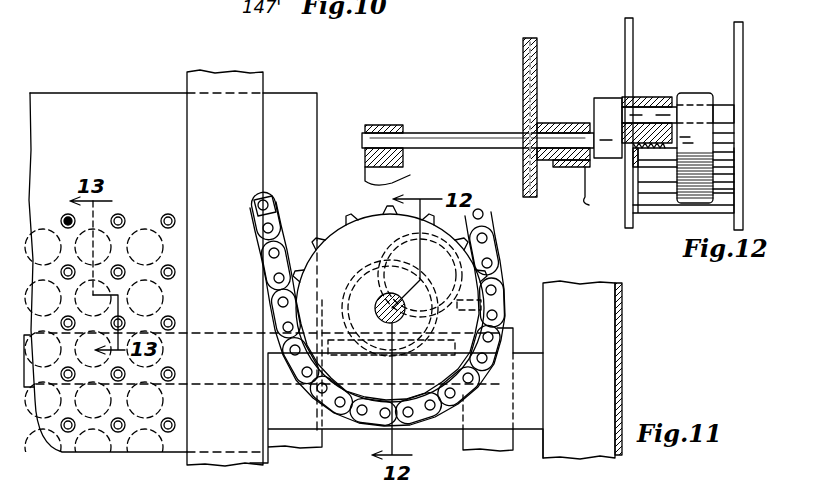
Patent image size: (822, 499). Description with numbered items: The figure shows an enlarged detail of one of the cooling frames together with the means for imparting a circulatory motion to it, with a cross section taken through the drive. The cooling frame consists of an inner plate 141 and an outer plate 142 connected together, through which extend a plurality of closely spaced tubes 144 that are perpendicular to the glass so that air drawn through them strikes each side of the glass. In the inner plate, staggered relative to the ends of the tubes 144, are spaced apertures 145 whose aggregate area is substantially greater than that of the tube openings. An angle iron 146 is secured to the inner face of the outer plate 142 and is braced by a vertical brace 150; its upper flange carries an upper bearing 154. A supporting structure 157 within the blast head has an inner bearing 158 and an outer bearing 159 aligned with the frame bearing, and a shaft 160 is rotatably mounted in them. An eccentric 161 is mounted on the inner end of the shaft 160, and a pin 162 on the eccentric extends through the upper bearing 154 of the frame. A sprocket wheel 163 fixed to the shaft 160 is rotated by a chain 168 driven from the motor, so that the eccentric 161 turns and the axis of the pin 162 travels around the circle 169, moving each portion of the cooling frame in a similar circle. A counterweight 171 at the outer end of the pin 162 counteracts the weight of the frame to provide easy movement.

In FIG. 12, the inner plate 141 is at (742, 67).
In FIG. 11, the outer plate 142 is at (93, 128).
In FIG. 12, the outer plate 142 is at (633, 27).
In FIG. 11, the tubes 144 is at (118, 213).
In FIG. 12, the tubes 144 is at (660, 190).
In FIG. 11, the apertures 145 is at (145, 228).
In FIG. 11, the angle iron 146 is at (222, 331).
In FIG. 11, the vertical brace 150 is at (480, 440).
In FIG. 11, the upper bearing 154 is at (397, 237).
In FIG. 12, the upper bearing 154 is at (648, 97).
In FIG. 11, the supporting structure 157 is at (253, 84).
In FIG. 12, the supporting structure 157 is at (373, 178).
In FIG. 12, the inner bearing 158 is at (383, 125).
In FIG. 11, the outer bearing 159 is at (470, 270).
In FIG. 12, the outer bearing 159 is at (568, 123).
In FIG. 11, the shaft 160 is at (393, 324).
In FIG. 12, the shaft 160 is at (450, 133).
In FIG. 11, the eccentric 161 is at (497, 293).
In FIG. 12, the eccentric 161 is at (604, 97).
In FIG. 11, the pin 162 is at (485, 243).
In FIG. 12, the pin 162 is at (662, 112).
In FIG. 11, the sprocket wheel 163 is at (313, 258).
In FIG. 12, the sprocket wheel 163 is at (523, 106).
In FIG. 11, the chain 168 is at (258, 225).
In FIG. 12, the chain 168 is at (523, 58).
In FIG. 11, the circle 169 is at (354, 286).
In FIG. 12, the counterweight 171 is at (702, 150).